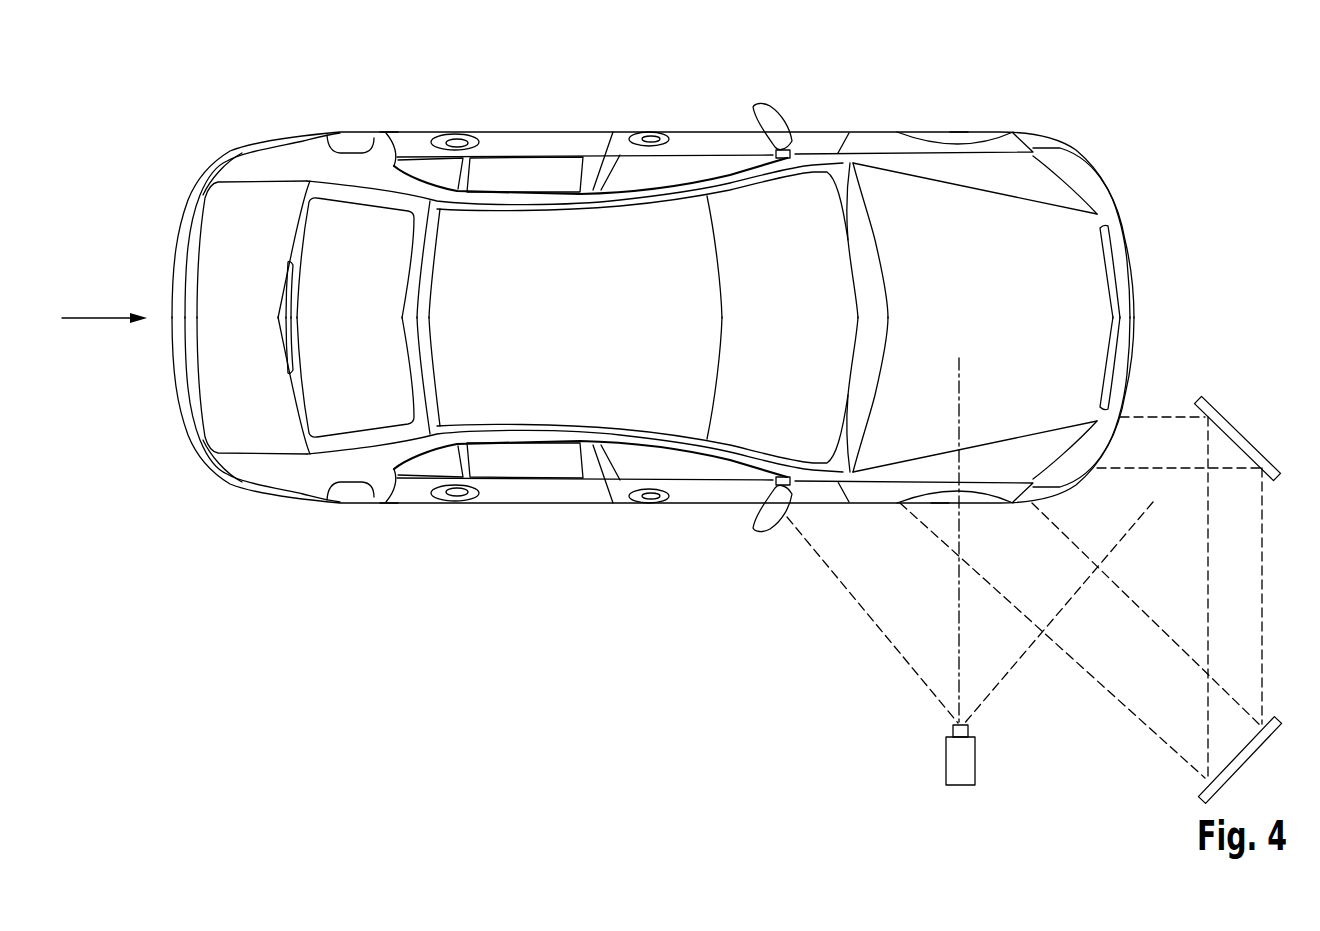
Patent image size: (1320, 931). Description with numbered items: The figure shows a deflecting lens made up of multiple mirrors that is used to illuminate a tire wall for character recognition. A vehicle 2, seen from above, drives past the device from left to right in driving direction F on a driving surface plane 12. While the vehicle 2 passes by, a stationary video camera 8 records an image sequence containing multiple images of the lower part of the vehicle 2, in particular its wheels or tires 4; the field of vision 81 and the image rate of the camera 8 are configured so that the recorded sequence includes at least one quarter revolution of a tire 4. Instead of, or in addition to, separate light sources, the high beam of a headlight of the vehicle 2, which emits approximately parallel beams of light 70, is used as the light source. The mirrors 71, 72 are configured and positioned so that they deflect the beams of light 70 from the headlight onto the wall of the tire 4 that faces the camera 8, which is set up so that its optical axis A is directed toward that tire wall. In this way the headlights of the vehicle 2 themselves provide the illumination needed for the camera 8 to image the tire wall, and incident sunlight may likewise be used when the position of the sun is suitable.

The vehicle 2 is at (183, 143).
The tire 4 is at (390, 118).
The video camera 8 is at (975, 760).
The driving surface plane 12 is at (85, 390).
The beams of light 70 is at (1158, 398).
The mirror 71 is at (1240, 428).
The mirror 72 is at (1205, 780).
The field of vision 81 is at (1035, 680).
The optical axis A is at (962, 373).
The driving direction F is at (104, 300).